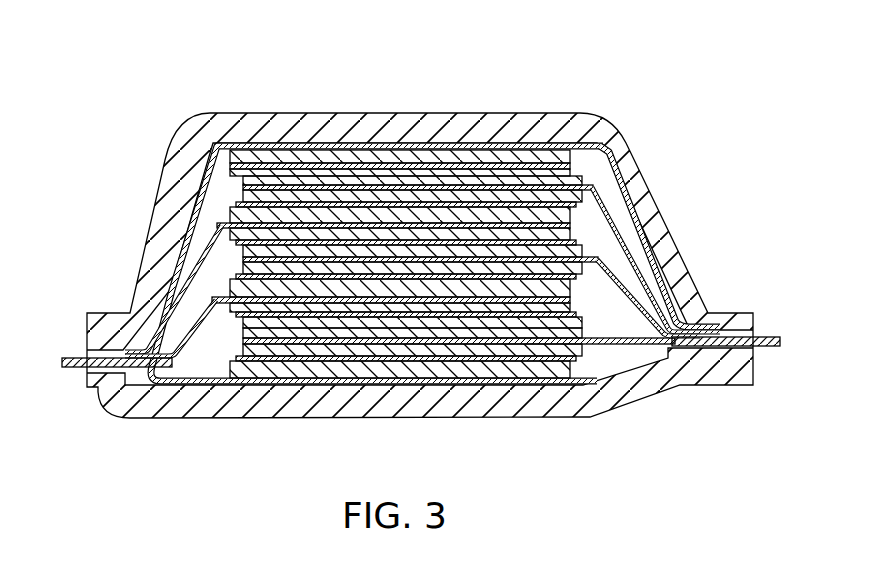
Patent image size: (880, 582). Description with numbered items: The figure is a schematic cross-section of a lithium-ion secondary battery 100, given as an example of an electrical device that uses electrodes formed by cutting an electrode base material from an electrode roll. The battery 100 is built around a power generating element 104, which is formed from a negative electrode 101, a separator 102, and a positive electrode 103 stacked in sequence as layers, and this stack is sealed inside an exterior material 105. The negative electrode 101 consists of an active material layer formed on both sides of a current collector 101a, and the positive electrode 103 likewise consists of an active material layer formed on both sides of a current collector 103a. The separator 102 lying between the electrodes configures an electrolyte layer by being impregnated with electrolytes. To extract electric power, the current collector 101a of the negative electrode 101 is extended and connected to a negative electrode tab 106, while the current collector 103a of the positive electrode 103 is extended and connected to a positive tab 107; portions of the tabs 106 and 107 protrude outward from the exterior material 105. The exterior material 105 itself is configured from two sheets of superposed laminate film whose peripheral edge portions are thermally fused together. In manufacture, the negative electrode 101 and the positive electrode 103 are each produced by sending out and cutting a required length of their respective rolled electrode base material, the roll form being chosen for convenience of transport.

The lithium-ion secondary battery 100 is at (118, 39).
The negative electrode 101 is at (266, 165).
The current collector 101a is at (318, 190).
The separator 102 is at (390, 190).
The positive electrode 103 is at (458, 190).
The current collector 103a is at (510, 190).
The power generating element 104 is at (599, 220).
The exterior material 105 is at (590, 144).
The negative electrode tab 106 is at (63, 356).
The positive tab 107 is at (778, 336).